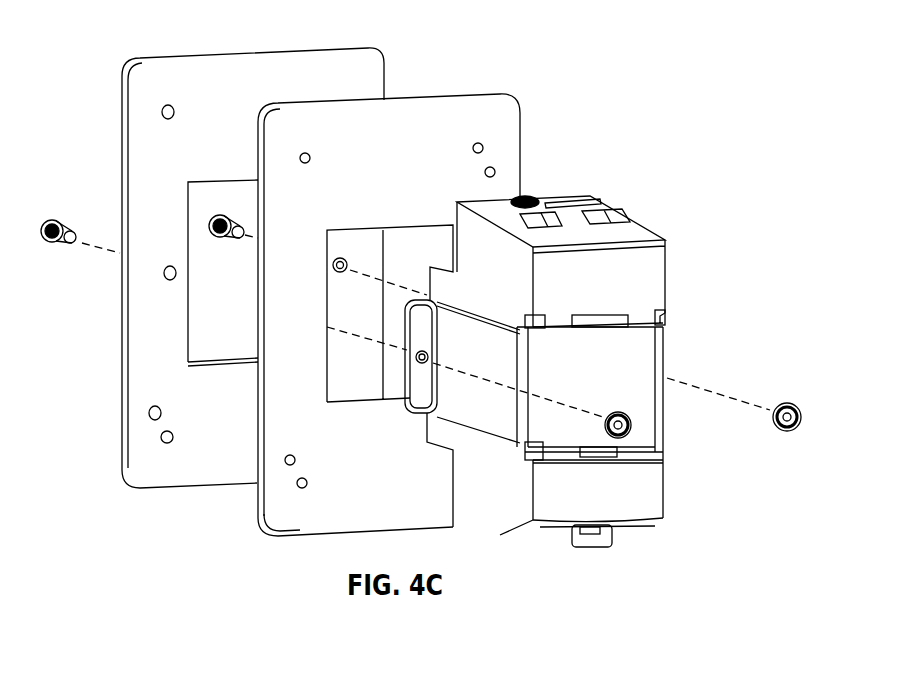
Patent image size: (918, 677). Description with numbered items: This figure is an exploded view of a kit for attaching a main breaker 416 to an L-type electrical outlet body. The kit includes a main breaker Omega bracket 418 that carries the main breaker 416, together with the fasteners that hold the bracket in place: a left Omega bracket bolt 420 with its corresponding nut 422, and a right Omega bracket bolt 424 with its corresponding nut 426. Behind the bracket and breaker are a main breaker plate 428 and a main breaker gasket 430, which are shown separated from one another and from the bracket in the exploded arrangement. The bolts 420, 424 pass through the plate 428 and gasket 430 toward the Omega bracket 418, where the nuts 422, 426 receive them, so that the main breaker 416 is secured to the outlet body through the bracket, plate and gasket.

The main breaker 416 is at (652, 283).
The main breaker Omega bracket 418 is at (643, 368).
The left Omega bracket bolt 420 is at (62, 222).
The nut 422 is at (633, 428).
The right Omega bracket bolt 424 is at (221, 216).
The nut 426 is at (795, 406).
The main breaker plate 428 is at (363, 68).
The main breaker gasket 430 is at (507, 125).